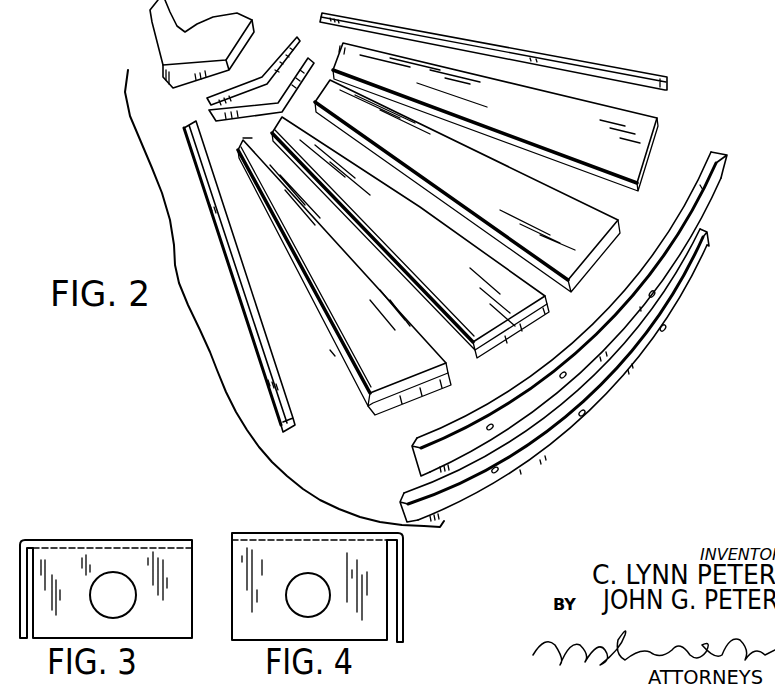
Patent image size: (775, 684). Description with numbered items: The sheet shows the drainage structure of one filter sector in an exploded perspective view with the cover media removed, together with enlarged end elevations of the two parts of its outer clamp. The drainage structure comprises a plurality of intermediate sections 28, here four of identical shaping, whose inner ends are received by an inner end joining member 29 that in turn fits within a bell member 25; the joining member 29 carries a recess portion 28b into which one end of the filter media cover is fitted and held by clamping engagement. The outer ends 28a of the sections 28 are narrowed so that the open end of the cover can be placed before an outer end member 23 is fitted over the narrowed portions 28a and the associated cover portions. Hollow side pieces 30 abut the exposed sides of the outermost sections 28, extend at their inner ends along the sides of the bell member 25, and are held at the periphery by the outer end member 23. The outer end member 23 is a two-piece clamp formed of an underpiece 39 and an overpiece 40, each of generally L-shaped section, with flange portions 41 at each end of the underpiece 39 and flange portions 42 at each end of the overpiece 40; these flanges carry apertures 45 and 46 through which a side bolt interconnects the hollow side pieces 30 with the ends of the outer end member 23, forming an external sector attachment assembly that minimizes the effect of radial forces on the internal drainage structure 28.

In FIG. 2, the outer end member 23 is at (723, 146).
In FIG. 2, the bell member 25 is at (203, 53).
In FIG. 2, the intermediate sections 28 is at (598, 141).
In FIG. 2, the outer ends 28a is at (400, 388).
In FIG. 2, the recess portion 28b is at (250, 141).
In FIG. 2, the inner end joining member 29 is at (316, 58).
In FIG. 2, the hollow side pieces 30 is at (593, 60).
In FIG. 3, the underpiece 39 is at (98, 540).
In FIG. 4, the overpiece 40 is at (278, 533).
In FIG. 3, the flange portions 41 is at (182, 602).
In FIG. 4, the flange portions 42 is at (243, 622).
In FIG. 3, the aperture 45 is at (120, 603).
In FIG. 4, the aperture 46 is at (302, 587).